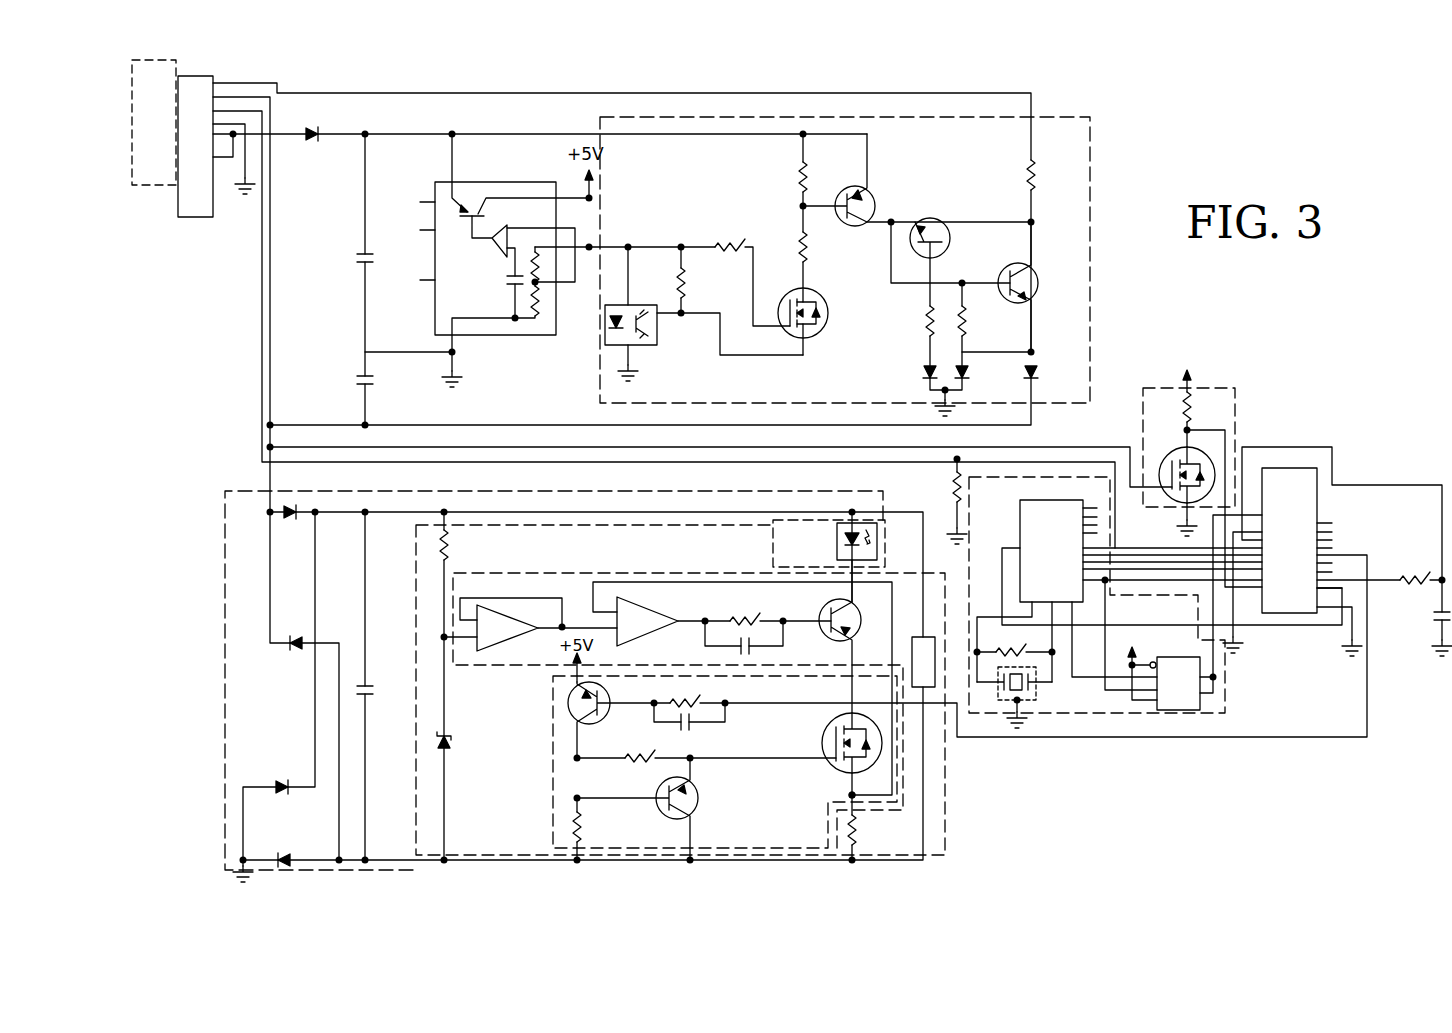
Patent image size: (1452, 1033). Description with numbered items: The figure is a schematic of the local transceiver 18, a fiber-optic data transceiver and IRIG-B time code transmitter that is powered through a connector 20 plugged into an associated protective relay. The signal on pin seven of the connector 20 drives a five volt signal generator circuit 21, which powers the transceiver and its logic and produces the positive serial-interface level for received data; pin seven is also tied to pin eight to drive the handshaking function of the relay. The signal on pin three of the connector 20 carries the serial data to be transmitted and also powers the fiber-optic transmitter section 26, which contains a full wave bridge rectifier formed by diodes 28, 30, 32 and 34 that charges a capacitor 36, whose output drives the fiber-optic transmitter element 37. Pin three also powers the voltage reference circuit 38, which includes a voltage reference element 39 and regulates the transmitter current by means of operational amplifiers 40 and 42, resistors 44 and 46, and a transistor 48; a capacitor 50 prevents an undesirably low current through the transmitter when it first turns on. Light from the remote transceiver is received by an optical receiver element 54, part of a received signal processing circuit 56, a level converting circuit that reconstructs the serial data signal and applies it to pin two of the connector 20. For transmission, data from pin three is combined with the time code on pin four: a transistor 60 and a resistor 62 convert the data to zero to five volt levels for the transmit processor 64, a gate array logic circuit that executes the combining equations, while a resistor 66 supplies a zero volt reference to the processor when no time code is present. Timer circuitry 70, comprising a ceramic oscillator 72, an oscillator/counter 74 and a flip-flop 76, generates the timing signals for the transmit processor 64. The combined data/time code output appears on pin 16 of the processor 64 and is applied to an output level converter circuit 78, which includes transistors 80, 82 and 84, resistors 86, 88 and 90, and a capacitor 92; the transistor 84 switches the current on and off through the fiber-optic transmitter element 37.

The pin 16 of processor 16 is at (1292, 538).
The local transceiver 18 is at (1096, 98).
The connector 20 is at (214, 80).
The 5 volt signal generator circuit 21 is at (435, 207).
The fiber-optic transmitter section 26 is at (858, 490).
The diode 28 is at (284, 521).
The diode 30 is at (283, 778).
The diode 32 is at (287, 854).
The diode 34 is at (296, 652).
The capacitor 36 is at (370, 686).
The fiber-optic transmitter element 37 is at (837, 540).
The voltage reference circuit 38 is at (945, 768).
The voltage reference element 39 is at (915, 636).
The operational amplifier 40 is at (503, 651).
The operational amplifier 42 is at (646, 628).
The resistor 44 is at (748, 618).
The resistor 46 is at (858, 828).
The transistor 48 is at (852, 634).
The capacitor 50 is at (768, 648).
The optical receiver element 54 is at (648, 345).
The received signal processing circuit 56 is at (1091, 218).
The transistor 60 is at (1177, 452).
The resistor 62 is at (1197, 388).
The transmit processor 64 is at (1337, 551).
The resistor 66 is at (948, 490).
The timer circuitry 70 is at (1228, 695).
The ceramic oscillator 72 is at (1036, 705).
The oscillator/counter 74 is at (1020, 518).
The flip-flop 76 is at (1183, 712).
The output level converter circuit 78 is at (778, 850).
The transistor 80 is at (610, 712).
The transistor 82 is at (699, 791).
The transistor 84 is at (828, 772).
The resistor 86 is at (585, 832).
The resistor 88 is at (690, 699).
The resistor 90 is at (638, 762).
The capacitor 92 is at (700, 727).